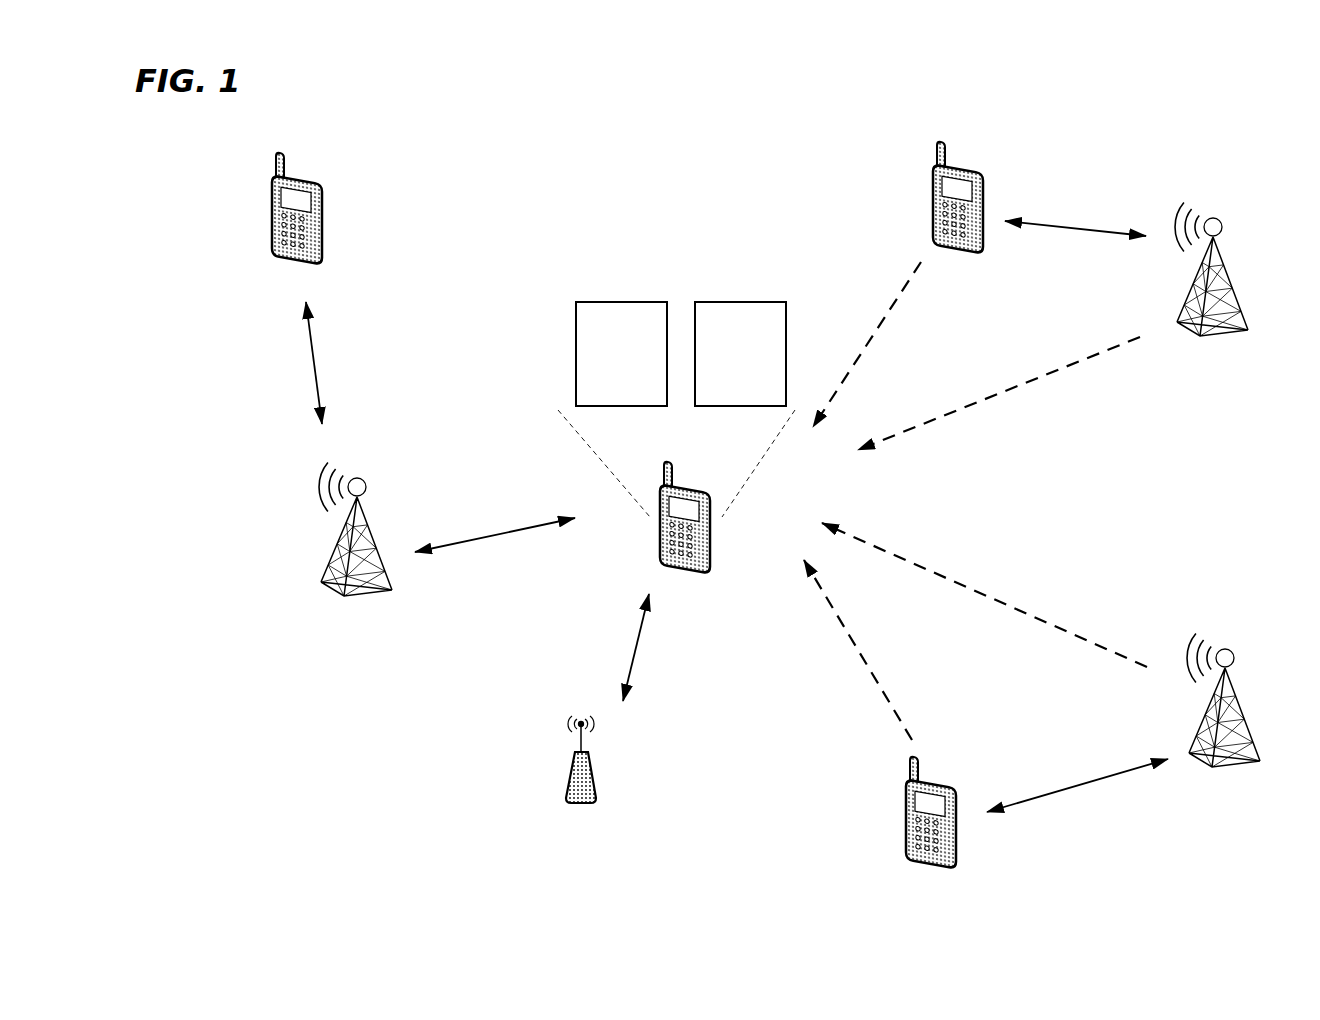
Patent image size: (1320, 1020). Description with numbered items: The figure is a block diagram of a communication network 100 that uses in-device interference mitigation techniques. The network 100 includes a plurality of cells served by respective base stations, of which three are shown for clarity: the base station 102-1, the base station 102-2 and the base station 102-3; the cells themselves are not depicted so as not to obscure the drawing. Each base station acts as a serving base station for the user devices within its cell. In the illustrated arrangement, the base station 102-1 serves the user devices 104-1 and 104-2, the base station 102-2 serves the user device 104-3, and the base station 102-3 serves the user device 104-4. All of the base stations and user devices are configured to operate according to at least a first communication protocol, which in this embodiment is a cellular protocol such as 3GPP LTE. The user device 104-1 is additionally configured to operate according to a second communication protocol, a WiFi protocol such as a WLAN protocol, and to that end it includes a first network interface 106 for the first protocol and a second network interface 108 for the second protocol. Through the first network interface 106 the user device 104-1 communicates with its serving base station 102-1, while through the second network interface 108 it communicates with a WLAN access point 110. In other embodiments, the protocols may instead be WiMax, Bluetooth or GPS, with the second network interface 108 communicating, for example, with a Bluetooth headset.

The communication network 100 is at (694, 108).
The base station 102-1 is at (330, 556).
The base station 102-2 is at (1187, 294).
The base station 102-3 is at (1197, 722).
The user device 104-1 is at (714, 552).
The user device 104-2 is at (327, 222).
The user device 104-3 is at (987, 180).
The user device 104-4 is at (952, 786).
The first network interface 106 is at (630, 298).
The second network interface 108 is at (755, 298).
The WLAN access point 110 is at (598, 780).